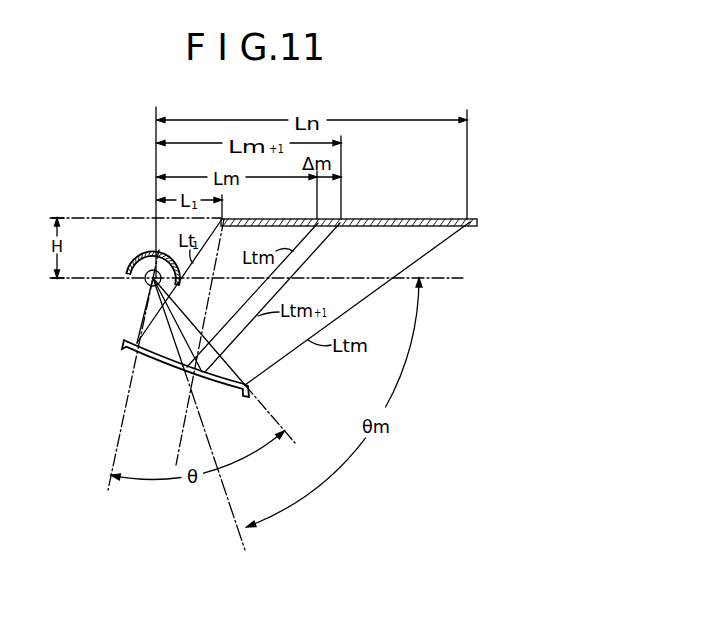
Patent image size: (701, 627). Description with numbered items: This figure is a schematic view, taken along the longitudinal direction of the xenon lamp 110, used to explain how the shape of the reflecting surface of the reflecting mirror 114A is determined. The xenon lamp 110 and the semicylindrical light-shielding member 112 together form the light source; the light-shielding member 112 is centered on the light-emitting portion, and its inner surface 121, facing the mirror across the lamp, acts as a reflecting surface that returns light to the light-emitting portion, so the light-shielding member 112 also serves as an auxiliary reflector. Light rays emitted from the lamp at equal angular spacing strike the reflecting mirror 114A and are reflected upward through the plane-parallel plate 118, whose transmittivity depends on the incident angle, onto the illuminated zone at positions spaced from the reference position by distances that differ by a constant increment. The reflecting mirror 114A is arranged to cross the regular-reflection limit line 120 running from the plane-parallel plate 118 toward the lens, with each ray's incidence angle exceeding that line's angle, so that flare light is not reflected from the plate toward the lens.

The xenon lamp 110 is at (145, 284).
The light-shielding member 112 is at (126, 270).
The inner surface 121 is at (148, 252).
The reflecting mirror 114A is at (217, 383).
The plane-parallel plate 118 is at (412, 219).
The regular-reflection limit line 120 is at (183, 433).